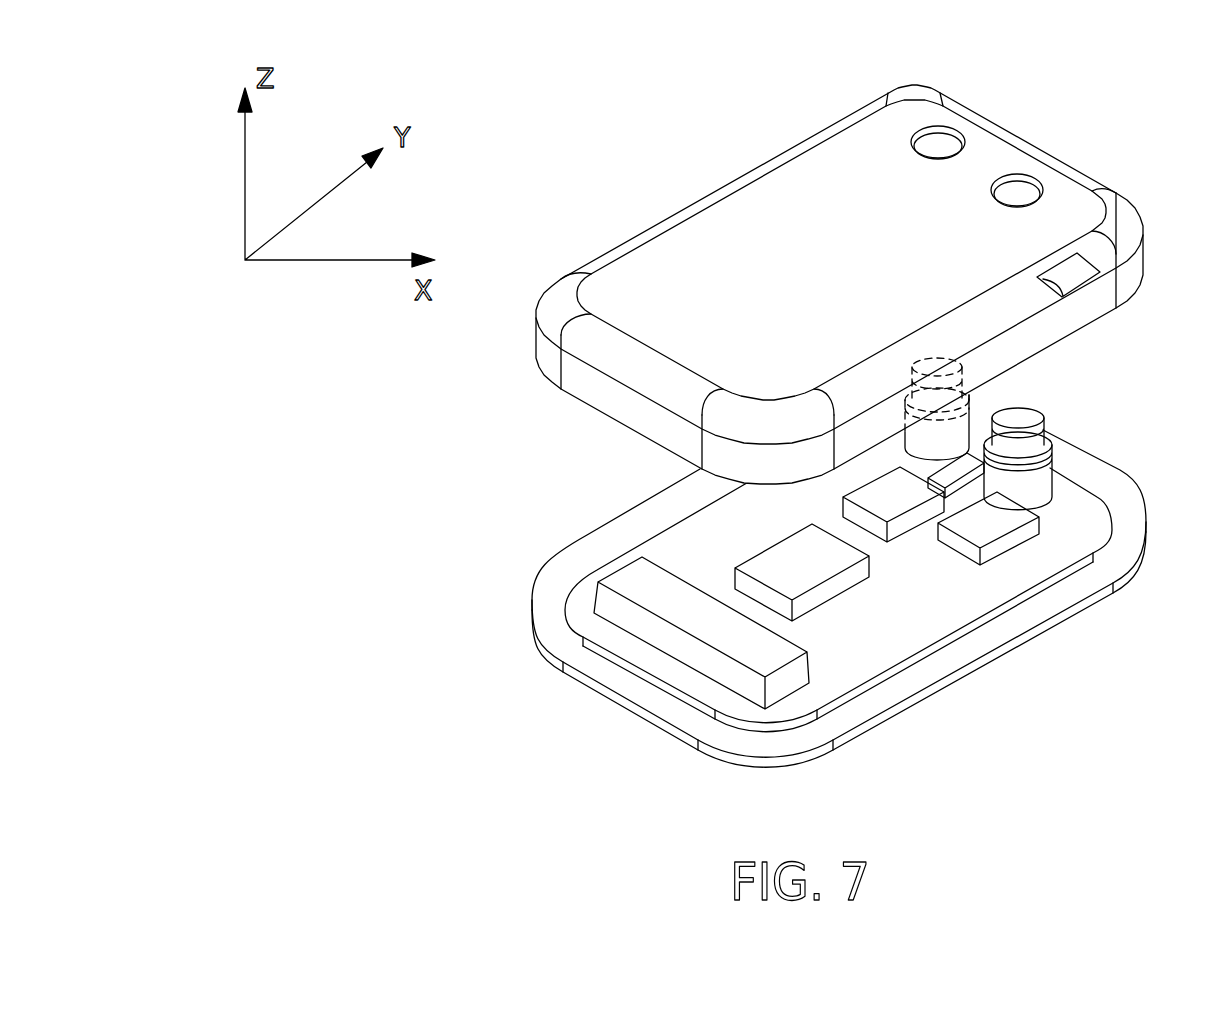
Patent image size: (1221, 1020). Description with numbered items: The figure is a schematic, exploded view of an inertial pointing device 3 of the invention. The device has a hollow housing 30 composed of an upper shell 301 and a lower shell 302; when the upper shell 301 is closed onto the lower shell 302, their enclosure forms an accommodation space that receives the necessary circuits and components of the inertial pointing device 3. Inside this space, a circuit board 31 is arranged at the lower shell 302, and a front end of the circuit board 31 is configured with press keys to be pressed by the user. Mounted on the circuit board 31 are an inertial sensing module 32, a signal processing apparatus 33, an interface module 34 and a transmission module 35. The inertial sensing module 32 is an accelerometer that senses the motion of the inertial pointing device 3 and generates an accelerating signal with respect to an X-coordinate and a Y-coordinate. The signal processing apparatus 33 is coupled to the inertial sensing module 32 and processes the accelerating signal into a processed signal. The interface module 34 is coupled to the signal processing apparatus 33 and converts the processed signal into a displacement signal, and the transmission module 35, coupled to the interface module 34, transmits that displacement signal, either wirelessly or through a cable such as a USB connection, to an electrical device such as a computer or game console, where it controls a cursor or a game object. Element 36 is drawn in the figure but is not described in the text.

The inertial pointing device 3 is at (687, 145).
The hollow housing 30 is at (330, 490).
The upper shell 301 is at (560, 357).
The lower shell 302 is at (587, 543).
The circuit board 31 is at (920, 625).
The inertial sensing module 32 is at (788, 690).
The signal processing apparatus 33 is at (782, 565).
The interface module 34 is at (877, 512).
The transmission module 35 is at (1017, 533).
The button 36 is at (965, 381).